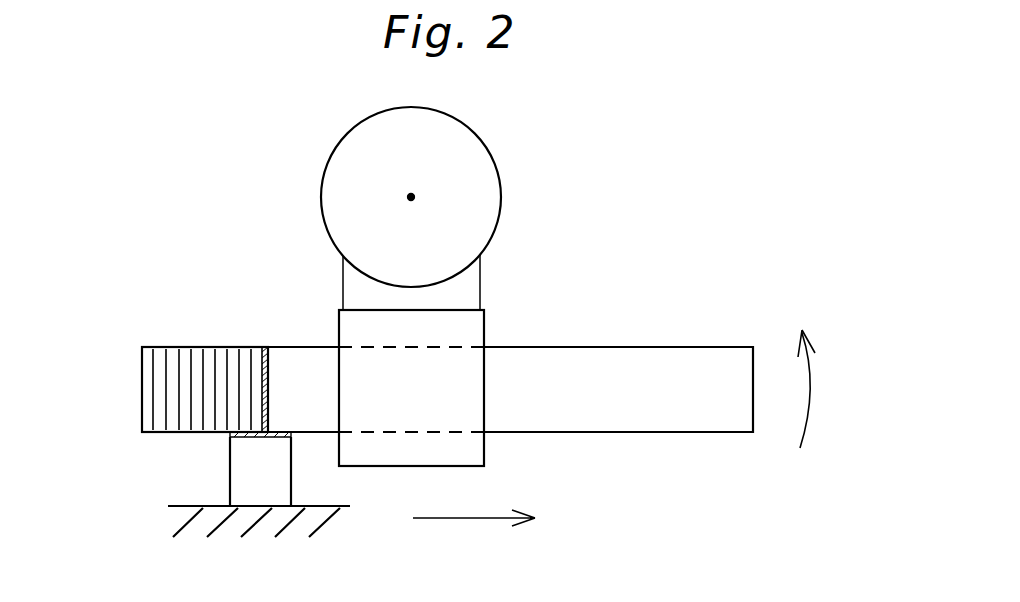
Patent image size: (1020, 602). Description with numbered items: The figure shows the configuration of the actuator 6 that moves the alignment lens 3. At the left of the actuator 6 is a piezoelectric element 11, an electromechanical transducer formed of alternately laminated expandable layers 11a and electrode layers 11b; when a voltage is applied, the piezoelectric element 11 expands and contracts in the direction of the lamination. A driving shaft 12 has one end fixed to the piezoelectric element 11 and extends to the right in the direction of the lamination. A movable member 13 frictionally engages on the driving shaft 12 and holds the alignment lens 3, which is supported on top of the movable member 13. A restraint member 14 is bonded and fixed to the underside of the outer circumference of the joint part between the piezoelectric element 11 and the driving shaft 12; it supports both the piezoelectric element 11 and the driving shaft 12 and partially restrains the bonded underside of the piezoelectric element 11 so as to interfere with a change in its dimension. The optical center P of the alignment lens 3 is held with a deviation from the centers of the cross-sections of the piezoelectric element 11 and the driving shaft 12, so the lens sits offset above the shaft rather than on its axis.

The actuator 6 is at (190, 217).
The alignment lens 3 is at (327, 163).
The optical center P is at (411, 197).
The piezoelectric element 11 is at (208, 345).
The expandable layers 11a is at (257, 345).
The electrode layers 11b is at (178, 345).
The driving shaft 12 is at (620, 432).
The movable member 13 is at (481, 328).
The restraint member 14 is at (232, 473).